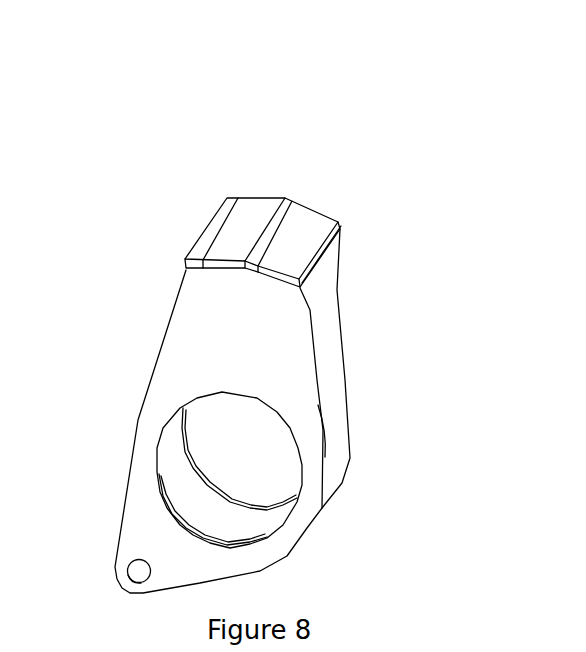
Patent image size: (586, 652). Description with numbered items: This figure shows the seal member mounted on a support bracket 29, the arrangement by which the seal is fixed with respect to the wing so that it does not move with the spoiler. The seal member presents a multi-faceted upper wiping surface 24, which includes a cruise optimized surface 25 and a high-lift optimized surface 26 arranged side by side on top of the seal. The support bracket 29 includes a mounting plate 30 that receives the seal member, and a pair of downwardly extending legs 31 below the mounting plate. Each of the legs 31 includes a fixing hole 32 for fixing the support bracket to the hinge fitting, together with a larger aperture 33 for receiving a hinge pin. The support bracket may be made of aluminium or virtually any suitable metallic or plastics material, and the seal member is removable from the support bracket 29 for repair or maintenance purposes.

The upper wiping surface 24 is at (289, 201).
The cruise optimized surface 25 is at (257, 215).
The high-lift optimized surface 26 is at (315, 227).
The support bracket 29 is at (230, 332).
The mounting plate 30 is at (320, 260).
The downwardly extending legs 31 is at (337, 440).
The fixing hole 32 is at (118, 578).
The aperture 33 is at (157, 470).